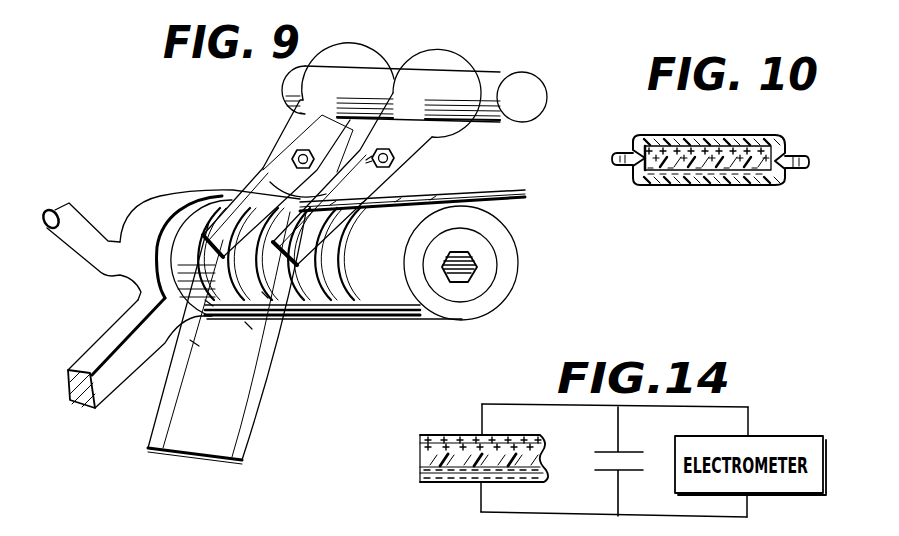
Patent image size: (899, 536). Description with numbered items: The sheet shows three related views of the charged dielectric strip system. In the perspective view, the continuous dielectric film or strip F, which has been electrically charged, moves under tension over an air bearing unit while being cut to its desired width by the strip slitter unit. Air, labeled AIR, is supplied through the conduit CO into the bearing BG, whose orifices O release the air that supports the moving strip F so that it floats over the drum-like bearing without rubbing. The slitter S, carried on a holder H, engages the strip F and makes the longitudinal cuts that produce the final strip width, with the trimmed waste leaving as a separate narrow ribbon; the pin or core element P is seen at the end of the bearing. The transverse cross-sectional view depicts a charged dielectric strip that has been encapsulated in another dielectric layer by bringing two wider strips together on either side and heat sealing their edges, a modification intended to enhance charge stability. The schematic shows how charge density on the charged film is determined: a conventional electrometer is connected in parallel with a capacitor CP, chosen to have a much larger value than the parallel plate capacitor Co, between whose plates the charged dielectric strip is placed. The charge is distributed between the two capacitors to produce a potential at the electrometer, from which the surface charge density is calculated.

In FIG. 9, the air supply AIR is at (52, 212).
In FIG. 9, the air conduit CO is at (88, 229).
In FIG. 9, the holder H is at (98, 350).
In FIG. 9, the slitter S is at (268, 170).
In FIG. 9, the dielectric strip F is at (422, 195).
In FIG. 9, the orifices O is at (350, 266).
In FIG. 9, the core unit P is at (477, 250).
In FIG. 9, the bearing BG is at (407, 324).
In FIG. 14, the parallel plate capacitor Co is at (484, 445).
In FIG. 14, the capacitor CP is at (619, 461).